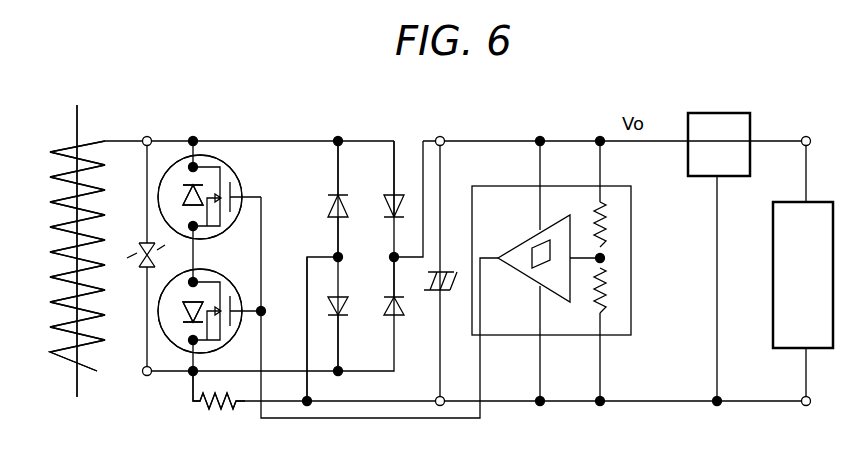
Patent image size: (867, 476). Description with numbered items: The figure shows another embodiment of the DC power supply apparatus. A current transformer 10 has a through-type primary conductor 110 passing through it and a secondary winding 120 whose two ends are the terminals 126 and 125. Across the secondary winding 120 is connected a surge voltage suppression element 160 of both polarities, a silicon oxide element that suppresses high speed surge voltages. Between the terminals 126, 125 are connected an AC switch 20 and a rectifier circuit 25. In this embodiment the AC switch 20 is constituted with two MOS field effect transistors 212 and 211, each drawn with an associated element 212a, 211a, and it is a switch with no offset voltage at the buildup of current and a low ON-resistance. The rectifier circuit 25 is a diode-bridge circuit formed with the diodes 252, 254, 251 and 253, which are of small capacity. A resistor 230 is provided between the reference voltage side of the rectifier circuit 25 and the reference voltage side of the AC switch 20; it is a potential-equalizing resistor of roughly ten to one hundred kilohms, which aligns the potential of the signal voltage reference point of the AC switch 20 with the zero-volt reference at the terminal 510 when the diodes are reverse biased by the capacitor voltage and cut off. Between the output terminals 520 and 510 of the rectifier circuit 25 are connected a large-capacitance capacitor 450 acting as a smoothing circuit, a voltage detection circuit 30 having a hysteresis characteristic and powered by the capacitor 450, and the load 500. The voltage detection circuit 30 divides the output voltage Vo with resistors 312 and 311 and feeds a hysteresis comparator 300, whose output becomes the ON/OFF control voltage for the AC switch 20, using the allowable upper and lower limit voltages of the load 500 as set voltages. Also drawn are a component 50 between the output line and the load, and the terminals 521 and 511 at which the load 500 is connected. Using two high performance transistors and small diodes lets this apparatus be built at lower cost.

The through-type primary conductor 110 is at (75, 130).
The current transformer 10 is at (127, 126).
The secondary winding 120 is at (104, 232).
The terminal 126 is at (148, 134).
The terminal 125 is at (147, 377).
The surge voltage suppression element 160 is at (141, 270).
The AC switch 20 is at (229, 126).
The MOS field effect transistor 212 is at (240, 172).
The parasitic diode 212a is at (187, 184).
The MOS field effect transistor 211 is at (230, 270).
The parasitic diode 211a is at (187, 322).
The resistor 230 is at (222, 406).
The rectifier circuit 25 is at (361, 126).
The diode 252 is at (330, 204).
The diode 254 is at (388, 198).
The diode 251 is at (344, 312).
The diode 253 is at (386, 303).
The capacitor 450 is at (425, 293).
The output terminal 520 is at (442, 136).
The output terminal 510 is at (440, 407).
The voltage detection circuit 30 is at (476, 182).
The hysteresis comparator 300 is at (527, 240).
The resistor 312 is at (612, 228).
The resistor 311 is at (612, 290).
The voltage regulator 50 is at (720, 112).
The output terminal 521 is at (808, 136).
The load 500 is at (816, 200).
The ground terminal 511 is at (806, 407).